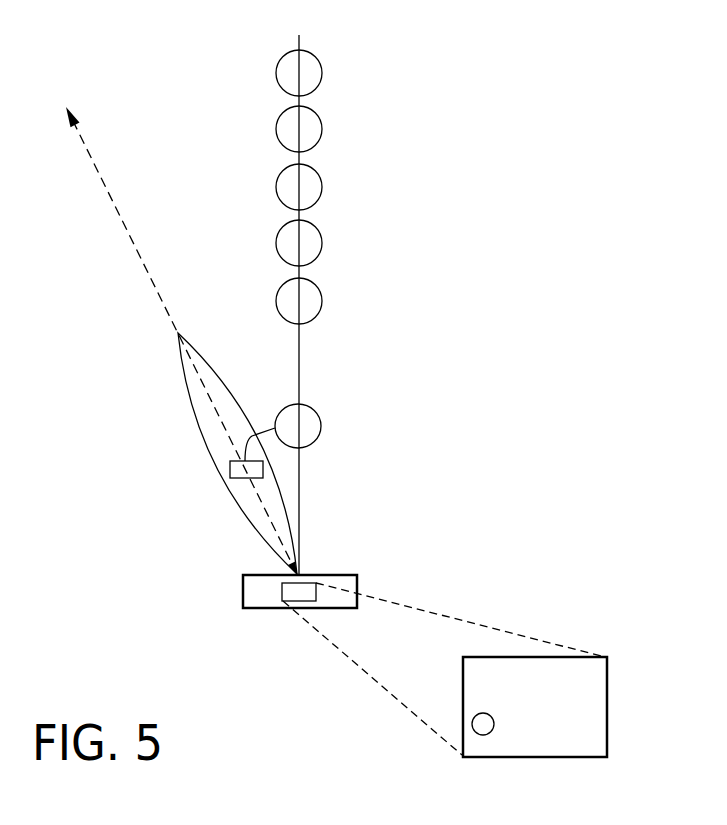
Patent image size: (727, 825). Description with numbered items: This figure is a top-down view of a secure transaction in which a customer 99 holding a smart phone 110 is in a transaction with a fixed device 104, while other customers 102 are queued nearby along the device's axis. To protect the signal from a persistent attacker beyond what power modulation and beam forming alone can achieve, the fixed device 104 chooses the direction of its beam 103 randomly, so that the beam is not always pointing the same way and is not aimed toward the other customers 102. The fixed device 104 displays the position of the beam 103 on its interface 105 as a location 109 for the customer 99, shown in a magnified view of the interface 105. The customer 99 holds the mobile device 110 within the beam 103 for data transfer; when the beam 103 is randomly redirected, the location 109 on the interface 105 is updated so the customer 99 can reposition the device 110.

The other customers 102 is at (337, 42).
The customer 99 is at (321, 427).
The beam 103 is at (192, 410).
The smart phone 110 is at (243, 478).
The fixed device 104 is at (243, 592).
The interface 105 is at (282, 594).
The location 109 is at (472, 724).